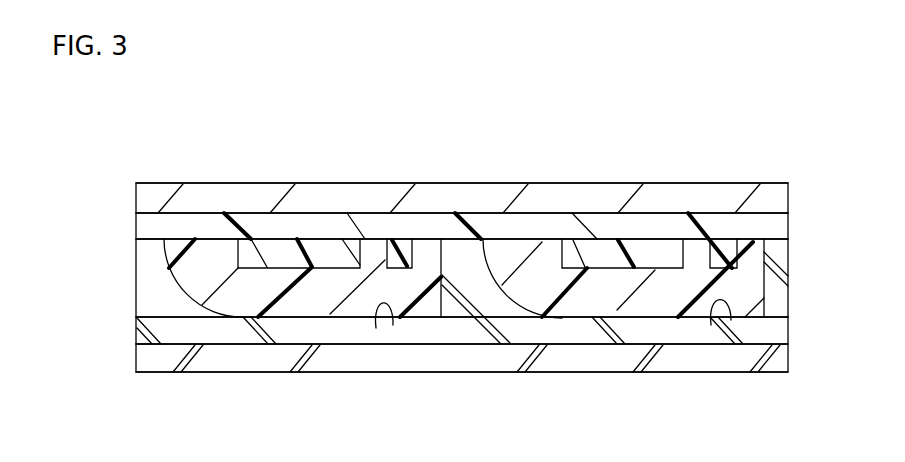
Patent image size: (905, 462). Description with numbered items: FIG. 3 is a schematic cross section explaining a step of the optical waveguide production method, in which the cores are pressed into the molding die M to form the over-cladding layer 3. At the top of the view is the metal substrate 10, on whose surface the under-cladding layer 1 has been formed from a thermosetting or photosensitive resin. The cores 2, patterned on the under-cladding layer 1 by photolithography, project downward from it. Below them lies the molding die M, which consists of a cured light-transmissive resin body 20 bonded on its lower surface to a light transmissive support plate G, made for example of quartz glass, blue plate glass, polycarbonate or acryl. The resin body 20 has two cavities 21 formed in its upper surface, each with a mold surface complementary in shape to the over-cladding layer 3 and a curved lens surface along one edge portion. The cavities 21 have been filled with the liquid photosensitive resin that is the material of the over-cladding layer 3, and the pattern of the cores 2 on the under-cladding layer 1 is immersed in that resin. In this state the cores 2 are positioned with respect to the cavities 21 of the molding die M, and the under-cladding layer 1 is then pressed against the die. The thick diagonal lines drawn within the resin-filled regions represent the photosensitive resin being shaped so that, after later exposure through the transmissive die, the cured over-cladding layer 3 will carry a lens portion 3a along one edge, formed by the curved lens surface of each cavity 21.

The molding die M is at (124, 286).
The substrate 10 is at (163, 192).
The under-cladding layer 1 is at (227, 222).
The cores 2 is at (400, 243).
The over-cladding layer 3 is at (284, 303).
The lens portion 3a is at (190, 283).
The cured light-transmissive resin body 20 is at (462, 340).
The cavities 21 is at (378, 328).
The light transmissive support plate G is at (154, 362).